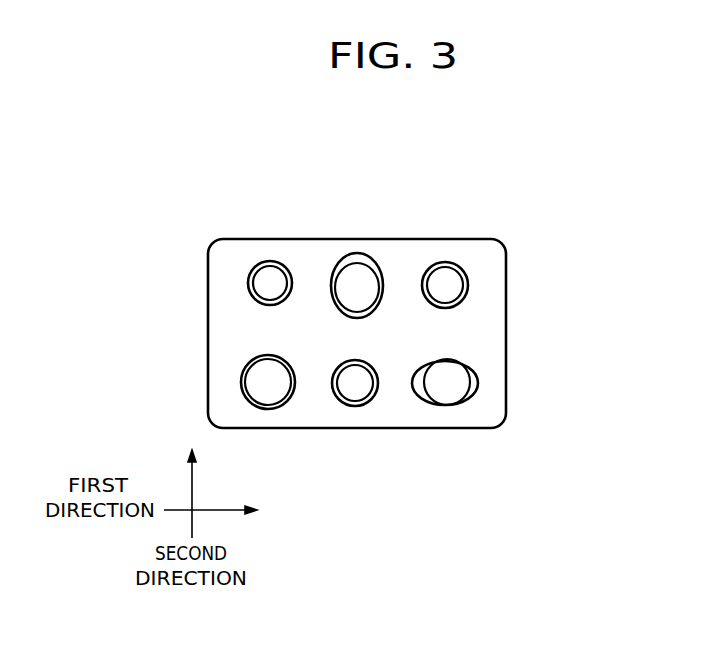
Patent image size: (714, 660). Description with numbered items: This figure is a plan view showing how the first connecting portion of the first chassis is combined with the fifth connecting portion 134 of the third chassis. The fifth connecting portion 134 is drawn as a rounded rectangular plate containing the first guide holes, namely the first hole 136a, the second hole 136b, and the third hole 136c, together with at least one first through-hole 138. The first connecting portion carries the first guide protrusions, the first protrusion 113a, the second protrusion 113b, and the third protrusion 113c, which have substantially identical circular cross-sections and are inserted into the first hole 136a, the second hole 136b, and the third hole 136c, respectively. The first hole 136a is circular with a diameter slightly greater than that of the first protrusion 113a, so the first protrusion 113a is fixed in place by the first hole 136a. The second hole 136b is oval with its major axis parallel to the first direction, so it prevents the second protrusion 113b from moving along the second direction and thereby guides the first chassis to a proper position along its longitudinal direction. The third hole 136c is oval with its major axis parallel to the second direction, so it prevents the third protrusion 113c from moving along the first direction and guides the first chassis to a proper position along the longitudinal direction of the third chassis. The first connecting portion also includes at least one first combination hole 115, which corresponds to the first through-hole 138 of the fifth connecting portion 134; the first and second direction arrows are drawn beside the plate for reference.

The fifth connecting portion 134 is at (506, 275).
The first through-hole 138 is at (248, 274).
The first combination hole 115 is at (262, 283).
The first protrusion 113a is at (260, 373).
The second protrusion 113b is at (352, 272).
The third protrusion 113c is at (448, 390).
The first hole 136a is at (243, 380).
The second hole 136b is at (375, 262).
The third hole 136c is at (413, 380).